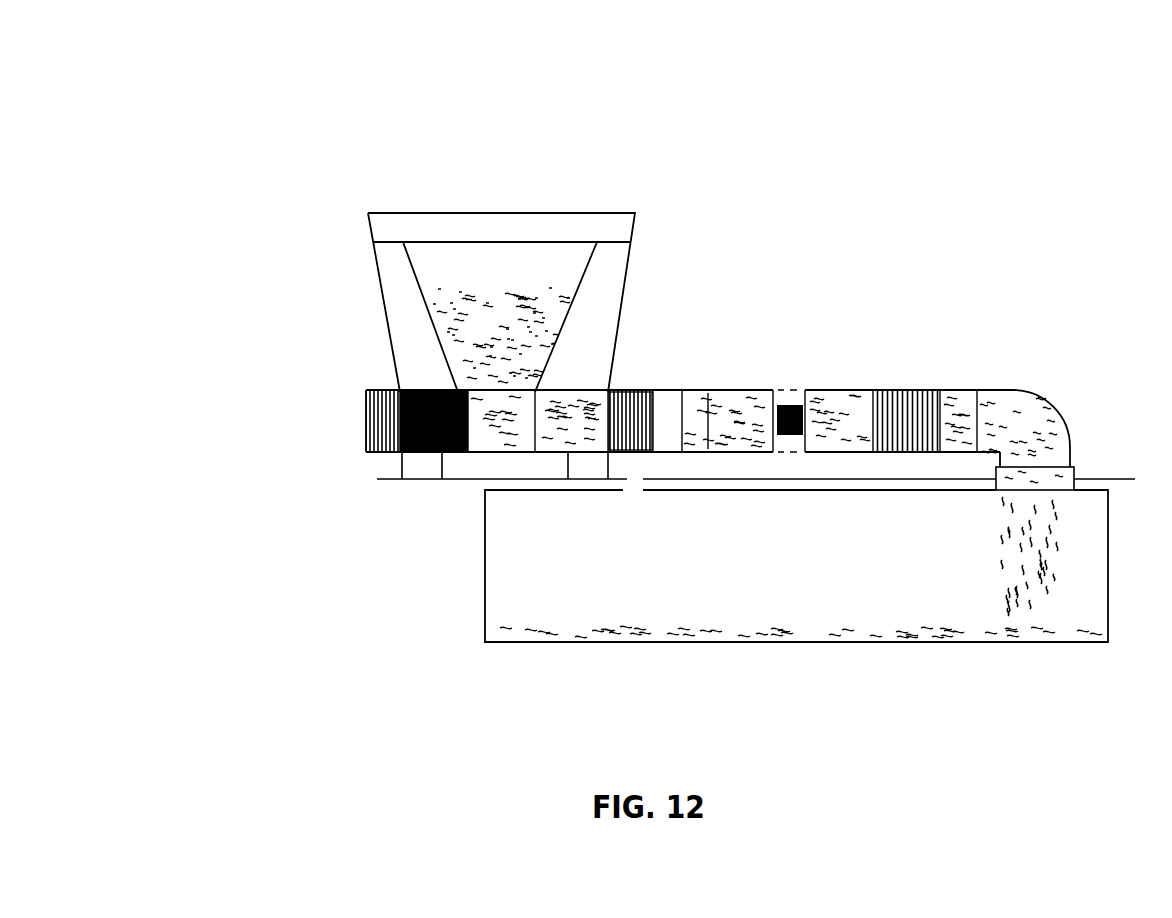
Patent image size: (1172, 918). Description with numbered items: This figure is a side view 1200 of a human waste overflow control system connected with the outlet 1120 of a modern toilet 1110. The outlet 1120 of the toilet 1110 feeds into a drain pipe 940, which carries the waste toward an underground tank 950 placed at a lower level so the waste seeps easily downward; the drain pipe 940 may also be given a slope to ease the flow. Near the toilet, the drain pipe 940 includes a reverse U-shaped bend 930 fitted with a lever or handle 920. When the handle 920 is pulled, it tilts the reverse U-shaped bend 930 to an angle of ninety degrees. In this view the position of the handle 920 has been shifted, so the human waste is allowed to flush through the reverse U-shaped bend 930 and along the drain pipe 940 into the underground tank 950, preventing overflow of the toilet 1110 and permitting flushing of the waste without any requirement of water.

The side view 1200 is at (316, 140).
The modern toilet 1110 is at (385, 283).
The outlet 1120 is at (608, 398).
The reverse U-shaped bend 930 is at (865, 405).
The lever 920 is at (795, 407).
The drain pipe 940 is at (940, 405).
The underground tank 950 is at (508, 617).